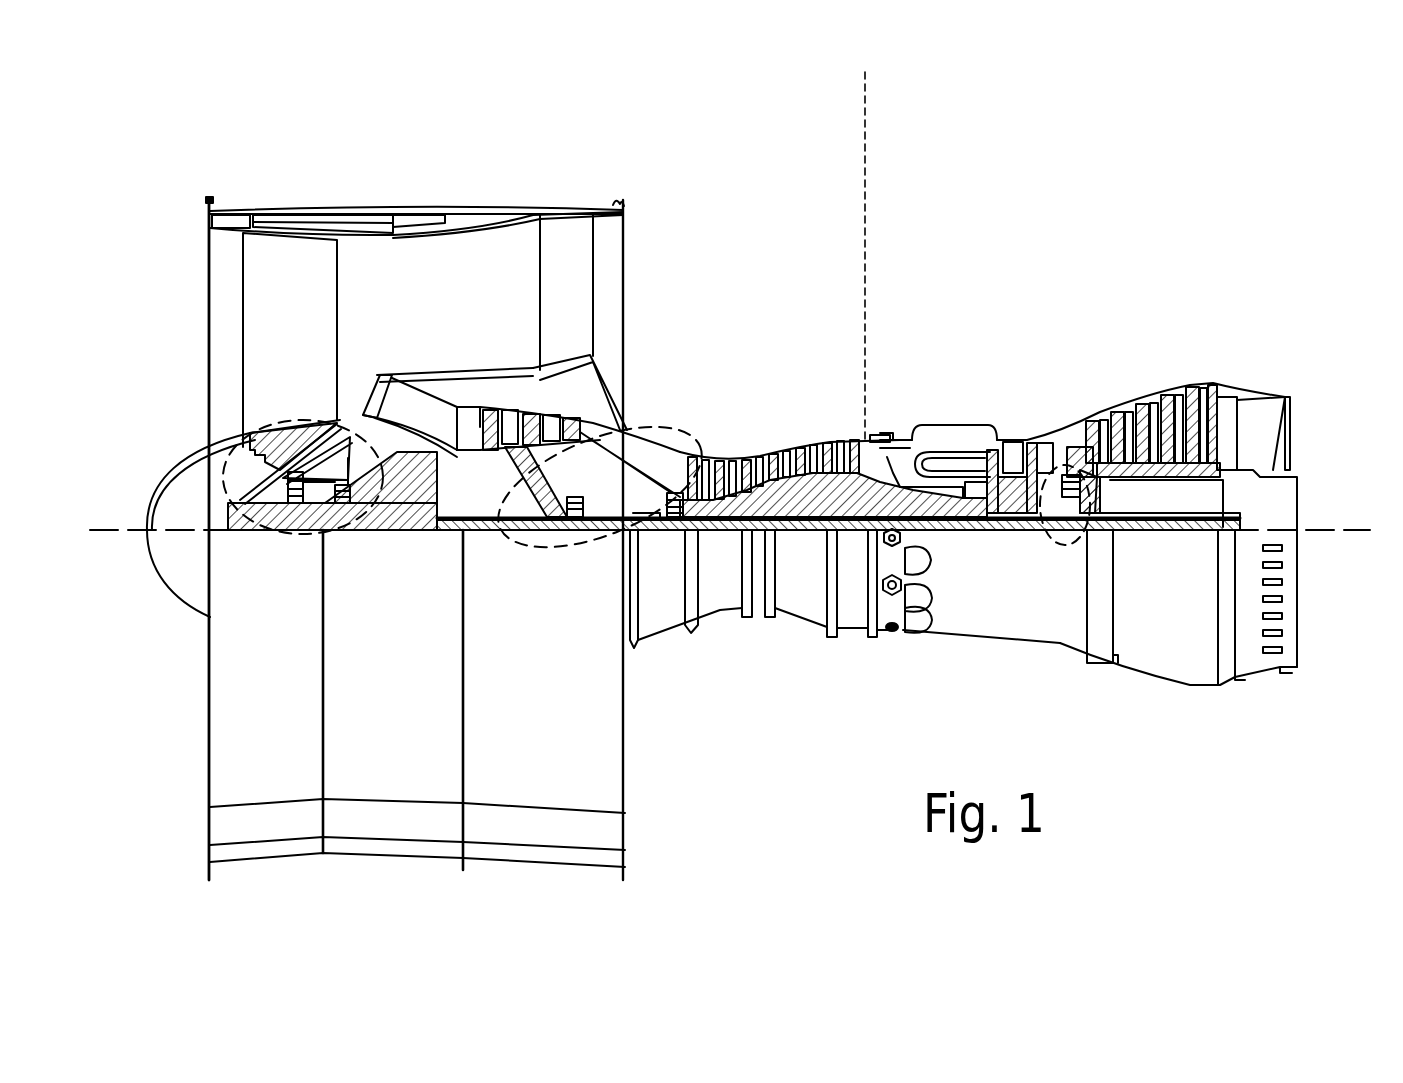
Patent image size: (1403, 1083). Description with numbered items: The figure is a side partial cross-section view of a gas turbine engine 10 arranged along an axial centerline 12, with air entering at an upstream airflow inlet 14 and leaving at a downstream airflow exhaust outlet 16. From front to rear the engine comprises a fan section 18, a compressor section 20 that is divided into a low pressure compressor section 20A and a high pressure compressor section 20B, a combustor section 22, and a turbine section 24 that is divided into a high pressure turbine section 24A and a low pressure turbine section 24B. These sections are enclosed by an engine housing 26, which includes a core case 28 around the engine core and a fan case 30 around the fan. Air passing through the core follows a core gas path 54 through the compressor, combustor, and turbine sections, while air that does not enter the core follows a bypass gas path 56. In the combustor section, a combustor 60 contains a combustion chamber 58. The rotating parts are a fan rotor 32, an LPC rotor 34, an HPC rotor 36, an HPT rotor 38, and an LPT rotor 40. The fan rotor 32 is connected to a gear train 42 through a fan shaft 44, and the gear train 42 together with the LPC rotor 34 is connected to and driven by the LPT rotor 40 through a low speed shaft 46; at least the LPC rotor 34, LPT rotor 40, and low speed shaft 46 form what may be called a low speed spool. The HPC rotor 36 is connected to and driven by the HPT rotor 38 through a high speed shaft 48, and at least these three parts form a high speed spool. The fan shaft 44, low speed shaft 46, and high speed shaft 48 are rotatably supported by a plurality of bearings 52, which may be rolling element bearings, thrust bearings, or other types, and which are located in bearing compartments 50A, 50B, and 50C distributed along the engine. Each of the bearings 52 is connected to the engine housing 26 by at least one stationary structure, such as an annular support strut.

The gas turbine engine 10 is at (1226, 163).
The axial centerline 12 is at (1353, 530).
The upstream airflow inlet 14 is at (209, 309).
The downstream airflow exhaust outlet 16 is at (1290, 430).
The fan section 18 is at (205, 171).
The compressor section 20 is at (865, 110).
The low pressure compressor section 20A is at (620, 349).
The high pressure compressor section 20B is at (670, 317).
The combustor section 22 is at (872, 317).
The turbine section 24 is at (978, 225).
The high pressure turbine section 24A is at (978, 317).
The low pressure turbine section 24B is at (1240, 317).
The engine housing 26 is at (644, 654).
The core case 28 is at (857, 631).
The fan case 30 is at (540, 867).
The fan rotor 32 is at (253, 455).
The LPC rotor 34 is at (535, 450).
The HPC rotor 36 is at (798, 531).
The HPT rotor 38 is at (1023, 520).
The LPT rotor 40 is at (1163, 483).
The gear train 42 is at (423, 520).
The fan shaft 44 is at (281, 503).
The low speed shaft 46 is at (1170, 533).
The high speed shaft 48 is at (950, 518).
The bearing compartment 50A is at (262, 425).
The bearing compartment 50B is at (622, 428).
The bearing compartment 50C is at (1060, 455).
The bearings 52 is at (345, 503).
The core gas path 54 is at (413, 409).
The bypass gas path 56 is at (428, 294).
The combustion chamber 58 is at (945, 465).
The combustor 60 is at (952, 424).